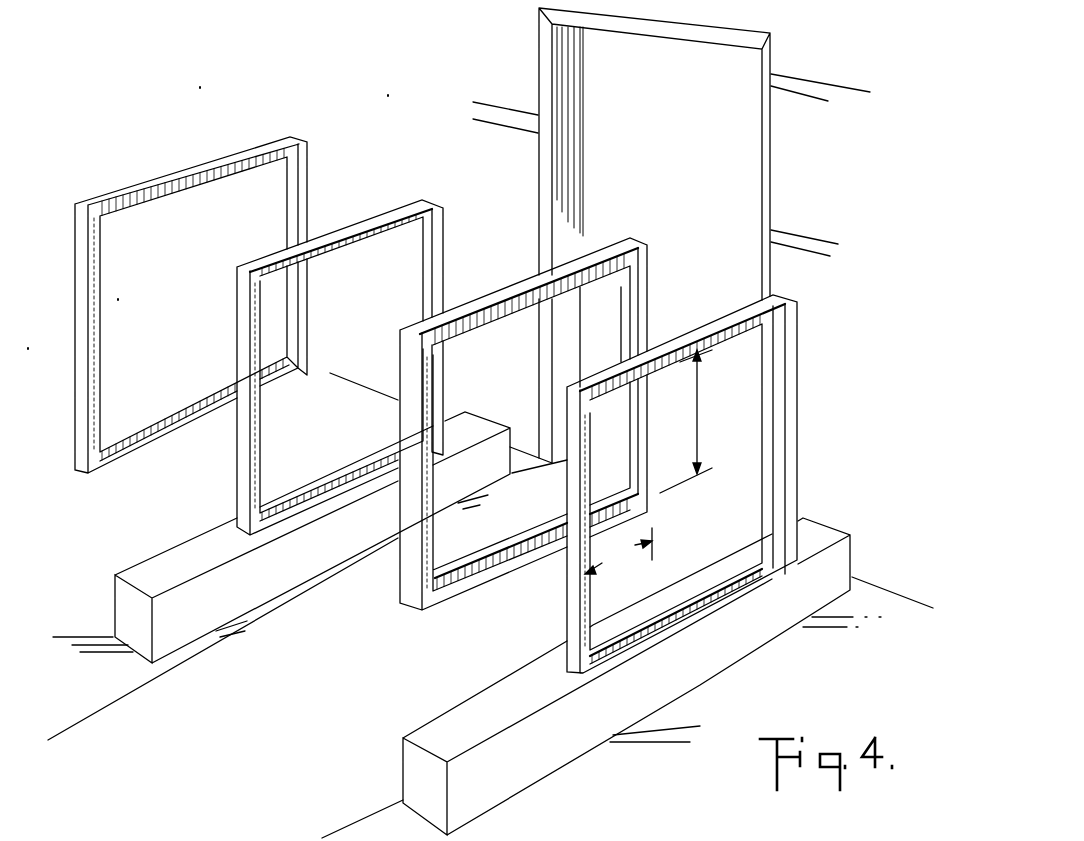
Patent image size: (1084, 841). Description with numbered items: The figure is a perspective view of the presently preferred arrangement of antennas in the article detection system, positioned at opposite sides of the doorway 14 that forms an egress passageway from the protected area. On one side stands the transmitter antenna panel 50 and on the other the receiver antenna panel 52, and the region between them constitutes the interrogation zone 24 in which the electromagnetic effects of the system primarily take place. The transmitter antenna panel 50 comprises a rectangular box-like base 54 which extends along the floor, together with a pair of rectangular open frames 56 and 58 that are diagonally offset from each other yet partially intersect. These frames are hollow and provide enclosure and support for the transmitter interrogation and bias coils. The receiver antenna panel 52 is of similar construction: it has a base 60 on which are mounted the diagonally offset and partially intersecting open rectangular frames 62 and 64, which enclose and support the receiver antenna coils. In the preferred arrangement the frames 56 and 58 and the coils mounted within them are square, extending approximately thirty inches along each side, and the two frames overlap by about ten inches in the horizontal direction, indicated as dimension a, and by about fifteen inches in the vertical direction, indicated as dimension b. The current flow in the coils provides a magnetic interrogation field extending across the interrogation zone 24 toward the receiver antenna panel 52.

The doorway 14 is at (748, 185).
The interrogation zone 24 is at (358, 677).
The transmitter antenna panel 50 is at (598, 455).
The receiver antenna panel 52 is at (235, 332).
The rectangular box-like base 54 is at (546, 770).
The rectangular open frame 56 is at (572, 603).
The rectangular open frame 58 is at (457, 590).
The base 60 is at (139, 561).
The open rectangular frame 62 is at (243, 469).
The open rectangular frame 64 is at (85, 392).
The horizontal overlap dimension a is at (618, 551).
The vertical overlap dimension b is at (688, 421).